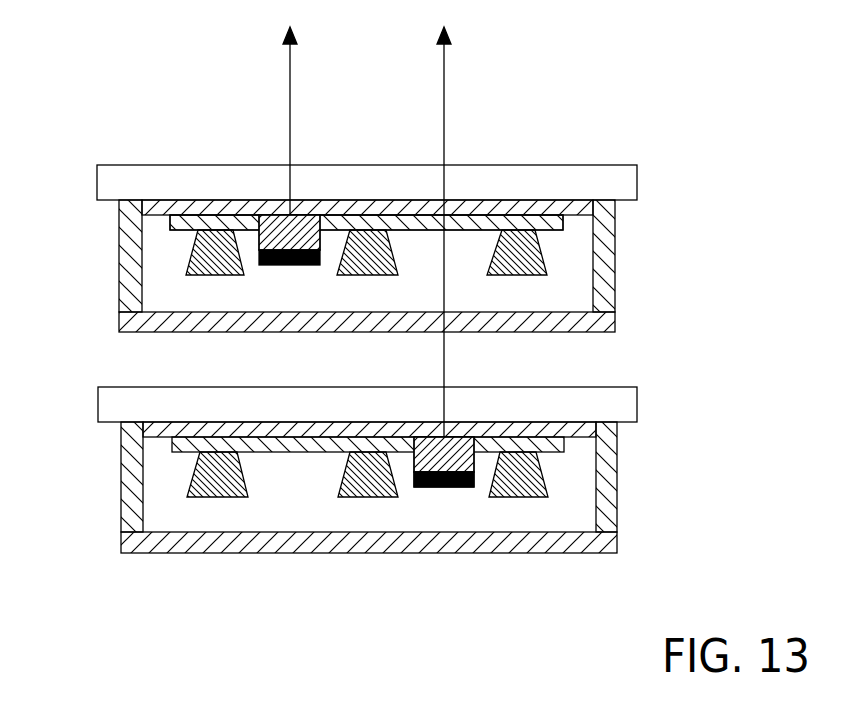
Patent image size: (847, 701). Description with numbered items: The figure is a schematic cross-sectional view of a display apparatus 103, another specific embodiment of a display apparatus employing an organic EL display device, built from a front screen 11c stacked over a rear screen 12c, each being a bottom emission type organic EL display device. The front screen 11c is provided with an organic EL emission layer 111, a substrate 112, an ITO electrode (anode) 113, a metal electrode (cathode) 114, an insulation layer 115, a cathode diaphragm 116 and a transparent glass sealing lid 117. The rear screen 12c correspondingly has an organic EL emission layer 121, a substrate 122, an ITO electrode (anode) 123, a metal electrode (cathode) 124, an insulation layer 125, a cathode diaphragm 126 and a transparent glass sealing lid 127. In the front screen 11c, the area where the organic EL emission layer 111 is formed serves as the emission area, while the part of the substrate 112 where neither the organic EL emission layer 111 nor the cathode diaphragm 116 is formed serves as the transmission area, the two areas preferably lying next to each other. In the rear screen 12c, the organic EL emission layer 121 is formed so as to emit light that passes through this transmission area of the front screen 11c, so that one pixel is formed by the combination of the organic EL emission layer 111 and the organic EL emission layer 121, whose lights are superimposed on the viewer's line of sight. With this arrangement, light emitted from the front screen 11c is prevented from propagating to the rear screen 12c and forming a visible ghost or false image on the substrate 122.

The display apparatus 103 is at (722, 82).
The front screen 11c is at (714, 272).
The rear screen 12c is at (716, 478).
The organic EL emission layer 111 is at (307, 214).
The substrate 112 is at (97, 198).
The ITO electrode (anode) 113 is at (575, 213).
The metal electrode (cathode) 114 is at (238, 214).
The insulation layer 115 is at (557, 231).
The cathode diaphragm 116 is at (204, 276).
The transparent glass sealing lid 117 is at (142, 333).
The organic EL emission layer 121 is at (433, 478).
The substrate 122 is at (637, 402).
The ITO electrode (anode) 123 is at (163, 433).
The metal electrode (cathode) 124 is at (446, 487).
The insulation layer 125 is at (183, 448).
The cathode diaphragm 126 is at (217, 498).
The transparent glass sealing lid 127 is at (602, 553).